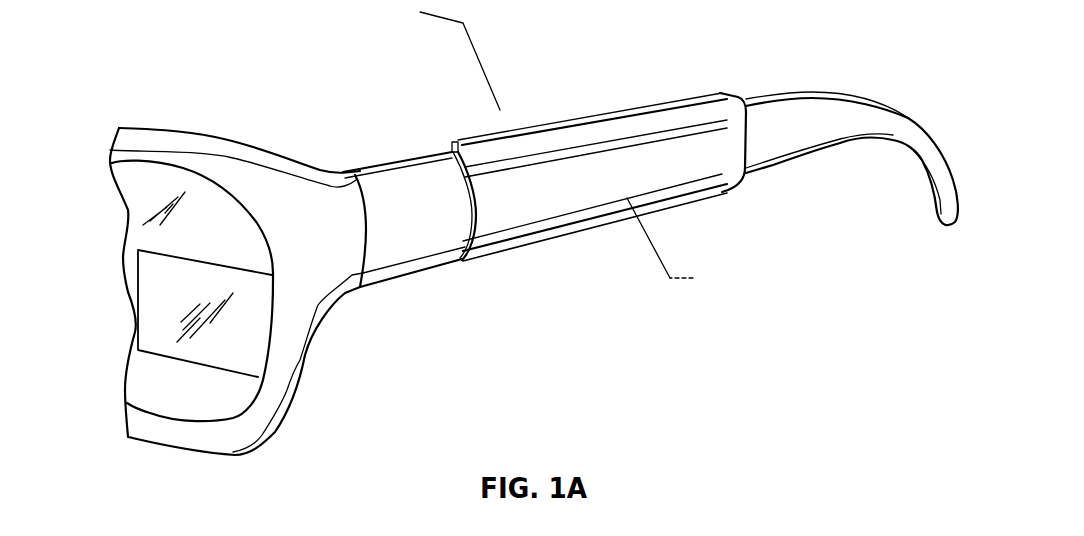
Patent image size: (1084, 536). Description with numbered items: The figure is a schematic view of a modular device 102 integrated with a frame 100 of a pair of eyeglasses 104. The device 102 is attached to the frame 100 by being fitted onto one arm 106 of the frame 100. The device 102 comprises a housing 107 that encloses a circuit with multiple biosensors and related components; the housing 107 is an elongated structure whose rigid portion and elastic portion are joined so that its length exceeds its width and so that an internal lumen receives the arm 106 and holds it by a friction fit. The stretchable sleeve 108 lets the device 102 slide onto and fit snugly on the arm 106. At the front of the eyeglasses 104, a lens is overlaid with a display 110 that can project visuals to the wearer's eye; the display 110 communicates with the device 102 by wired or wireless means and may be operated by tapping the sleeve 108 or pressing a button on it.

The frame 100 is at (171, 45).
The modular device 102 is at (562, 118).
The eyeglasses 104 is at (134, 200).
The arm 106 is at (913, 117).
The housing 107 is at (636, 72).
The sleeve 108 is at (550, 190).
The display 110 is at (155, 327).